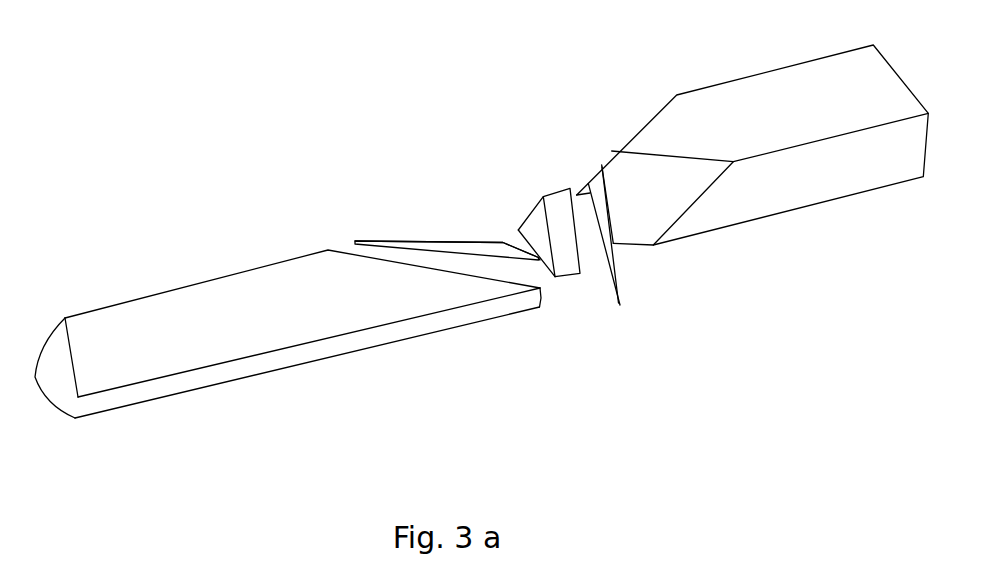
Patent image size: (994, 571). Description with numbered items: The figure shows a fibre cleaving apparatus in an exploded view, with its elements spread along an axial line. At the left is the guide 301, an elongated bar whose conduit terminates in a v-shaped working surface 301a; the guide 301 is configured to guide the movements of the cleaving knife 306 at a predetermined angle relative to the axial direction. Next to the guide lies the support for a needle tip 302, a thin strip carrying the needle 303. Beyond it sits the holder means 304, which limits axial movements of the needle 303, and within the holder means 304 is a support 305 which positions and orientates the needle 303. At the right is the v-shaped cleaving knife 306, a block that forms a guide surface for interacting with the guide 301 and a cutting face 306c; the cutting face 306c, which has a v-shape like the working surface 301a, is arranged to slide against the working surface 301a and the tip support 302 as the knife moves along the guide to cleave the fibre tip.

The guide 301 is at (137, 313).
The working surface 301a is at (473, 267).
The support for a needle tip 302 is at (344, 243).
The needle 303 is at (474, 245).
The holder means 304 is at (555, 203).
The support 305 is at (540, 258).
The v-shaped cleaving knife 306 is at (675, 123).
The cutting face 306c is at (633, 240).